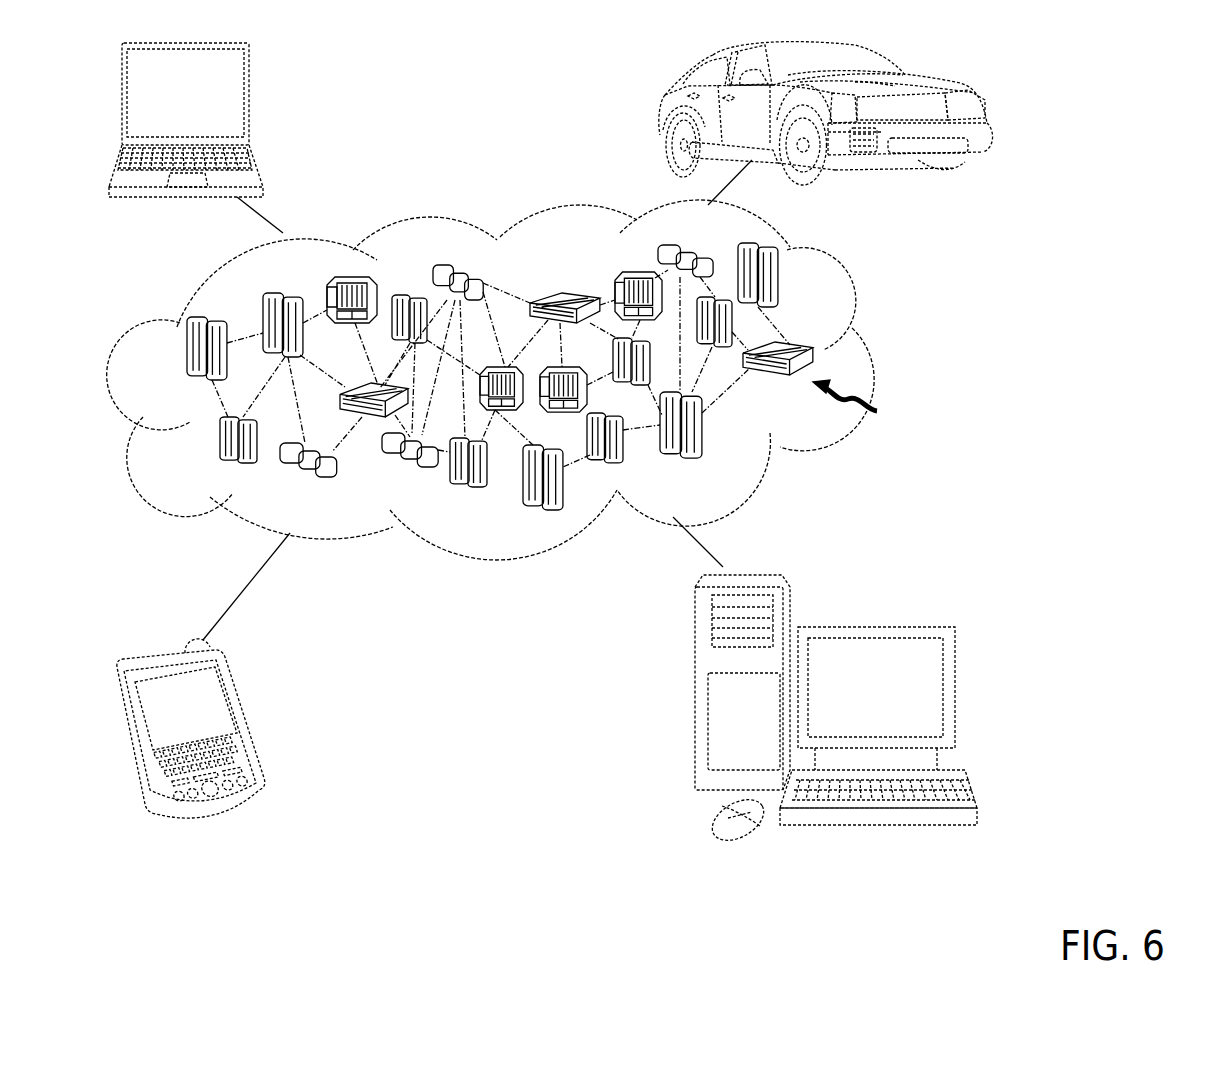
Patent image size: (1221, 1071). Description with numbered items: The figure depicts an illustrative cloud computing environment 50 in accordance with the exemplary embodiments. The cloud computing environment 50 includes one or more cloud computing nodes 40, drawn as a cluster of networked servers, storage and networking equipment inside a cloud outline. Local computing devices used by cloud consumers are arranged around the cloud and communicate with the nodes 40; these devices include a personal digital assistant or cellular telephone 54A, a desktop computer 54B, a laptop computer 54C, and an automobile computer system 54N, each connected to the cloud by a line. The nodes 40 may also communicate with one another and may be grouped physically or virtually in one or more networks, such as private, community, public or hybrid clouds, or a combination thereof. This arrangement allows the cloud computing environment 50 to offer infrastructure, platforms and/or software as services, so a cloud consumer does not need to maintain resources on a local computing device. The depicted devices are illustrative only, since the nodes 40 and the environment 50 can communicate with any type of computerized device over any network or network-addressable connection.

The cloud computing environment 50 is at (872, 356).
The cloud computing nodes 40 is at (863, 404).
The personal digital assistant (PDA) or cellular telephone 54A is at (243, 718).
The desktop computer 54B is at (872, 627).
The laptop computer 54C is at (250, 100).
The automobile computer system 54N is at (665, 113).